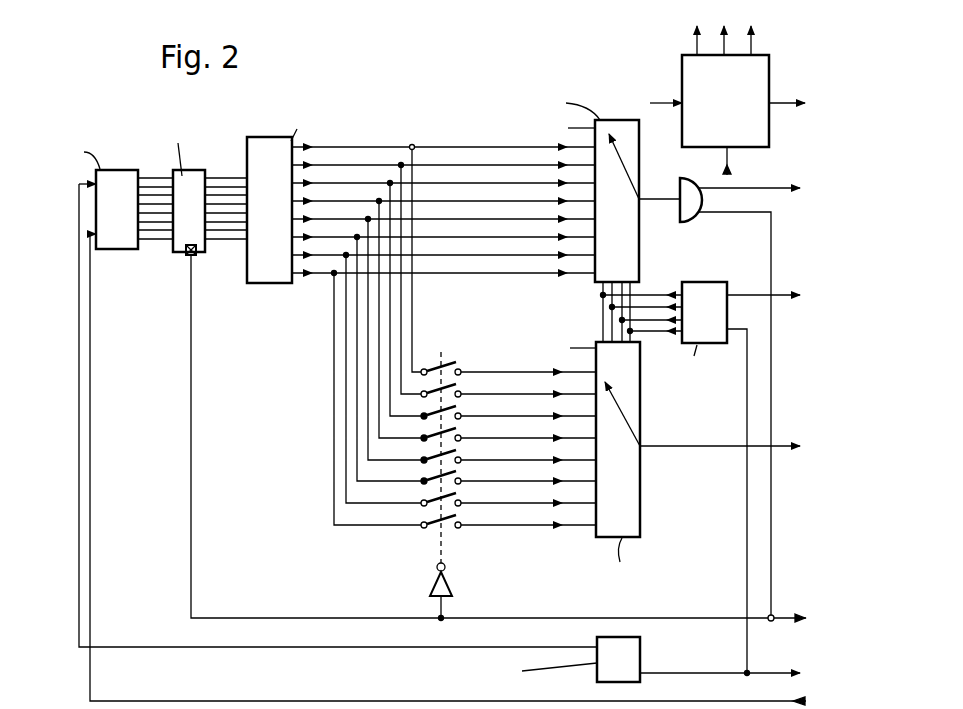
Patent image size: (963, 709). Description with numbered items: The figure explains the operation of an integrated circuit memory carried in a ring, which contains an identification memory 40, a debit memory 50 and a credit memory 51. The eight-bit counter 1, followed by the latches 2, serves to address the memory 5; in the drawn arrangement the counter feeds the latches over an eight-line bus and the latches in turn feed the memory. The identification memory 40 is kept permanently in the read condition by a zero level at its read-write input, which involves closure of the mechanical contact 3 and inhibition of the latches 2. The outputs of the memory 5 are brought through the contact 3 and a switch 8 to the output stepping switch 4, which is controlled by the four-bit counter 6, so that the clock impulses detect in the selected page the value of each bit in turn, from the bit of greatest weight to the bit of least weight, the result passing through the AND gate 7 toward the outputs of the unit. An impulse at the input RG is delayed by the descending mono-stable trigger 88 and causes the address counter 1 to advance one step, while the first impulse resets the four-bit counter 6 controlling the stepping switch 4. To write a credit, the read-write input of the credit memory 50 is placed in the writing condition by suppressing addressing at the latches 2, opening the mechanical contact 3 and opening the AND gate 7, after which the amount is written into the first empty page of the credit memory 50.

The eight-bit counter 1 is at (125, 169).
The latches 2 is at (201, 160).
The mechanical contact 3 is at (446, 358).
The output stepping switch 4 is at (640, 486).
The memory 5 is at (284, 135).
The four-bit counter 6 is at (702, 283).
The AND gate 7 is at (680, 186).
The switch 8 is at (624, 118).
The identification memory 40 is at (660, 94).
The debit memory 50 is at (724, 40).
The credit memory 51 is at (727, 139).
The descending mono-stable trigger 88 is at (642, 657).